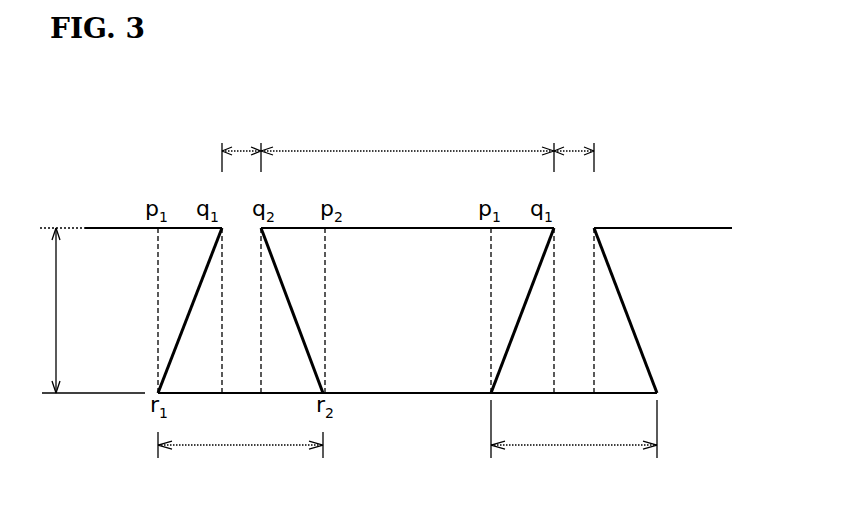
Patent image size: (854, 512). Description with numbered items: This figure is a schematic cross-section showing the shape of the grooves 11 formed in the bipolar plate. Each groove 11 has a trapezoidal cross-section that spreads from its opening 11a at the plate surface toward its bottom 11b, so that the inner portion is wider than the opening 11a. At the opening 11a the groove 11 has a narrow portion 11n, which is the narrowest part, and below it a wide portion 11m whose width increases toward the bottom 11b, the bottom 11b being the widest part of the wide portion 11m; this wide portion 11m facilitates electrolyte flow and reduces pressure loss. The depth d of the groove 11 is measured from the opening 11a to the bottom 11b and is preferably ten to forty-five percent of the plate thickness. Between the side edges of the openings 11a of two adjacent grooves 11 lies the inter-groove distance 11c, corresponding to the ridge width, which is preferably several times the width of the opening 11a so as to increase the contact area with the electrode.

The groove 11 is at (530, 343).
The opening 11a is at (233, 232).
The bottom 11b is at (235, 393).
The narrow portion 11n is at (411, 140).
The inter-groove distance 11c is at (407, 131).
The wide portion 11m is at (407, 439).
The depth d is at (46, 310).